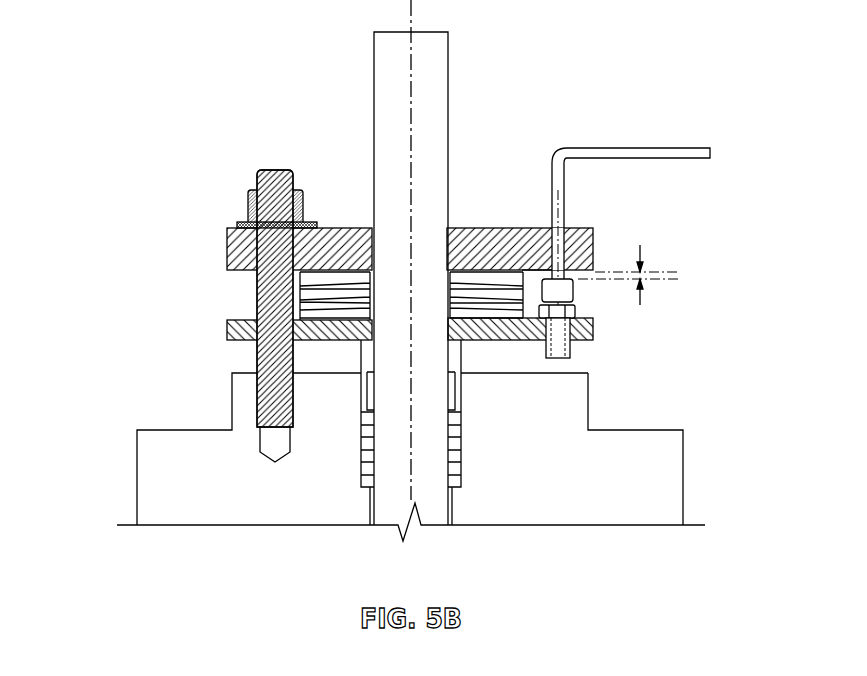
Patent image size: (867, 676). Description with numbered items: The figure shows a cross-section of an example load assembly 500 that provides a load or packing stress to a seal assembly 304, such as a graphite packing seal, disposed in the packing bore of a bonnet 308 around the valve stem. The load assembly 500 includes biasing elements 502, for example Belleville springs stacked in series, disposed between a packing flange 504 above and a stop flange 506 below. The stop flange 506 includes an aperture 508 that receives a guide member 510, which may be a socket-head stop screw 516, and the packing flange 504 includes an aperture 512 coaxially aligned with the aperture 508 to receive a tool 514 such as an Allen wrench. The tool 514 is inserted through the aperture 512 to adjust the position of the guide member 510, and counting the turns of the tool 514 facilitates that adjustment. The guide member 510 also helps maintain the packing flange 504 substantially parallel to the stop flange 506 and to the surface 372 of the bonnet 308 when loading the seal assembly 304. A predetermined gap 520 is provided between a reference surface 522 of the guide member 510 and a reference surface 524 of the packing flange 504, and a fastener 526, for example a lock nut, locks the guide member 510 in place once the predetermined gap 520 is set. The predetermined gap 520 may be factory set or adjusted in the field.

The load assembly 500 is at (390, 289).
The biasing elements 502 is at (303, 295).
The packing flange 504 is at (227, 251).
The stop flange 506 is at (228, 331).
The aperture 508 is at (575, 340).
The guide member 510 is at (570, 356).
The aperture 512 is at (567, 252).
The tool 514 is at (645, 148).
The socket-head stop screw 516 is at (541, 290).
The predetermined gap 520 is at (643, 274).
The reference surface 522 is at (575, 281).
The reference surface 524 is at (535, 279).
The fastener 526 is at (577, 313).
The seal assembly 304 is at (350, 460).
The bonnet 308 is at (683, 464).
The surface 372 is at (549, 373).